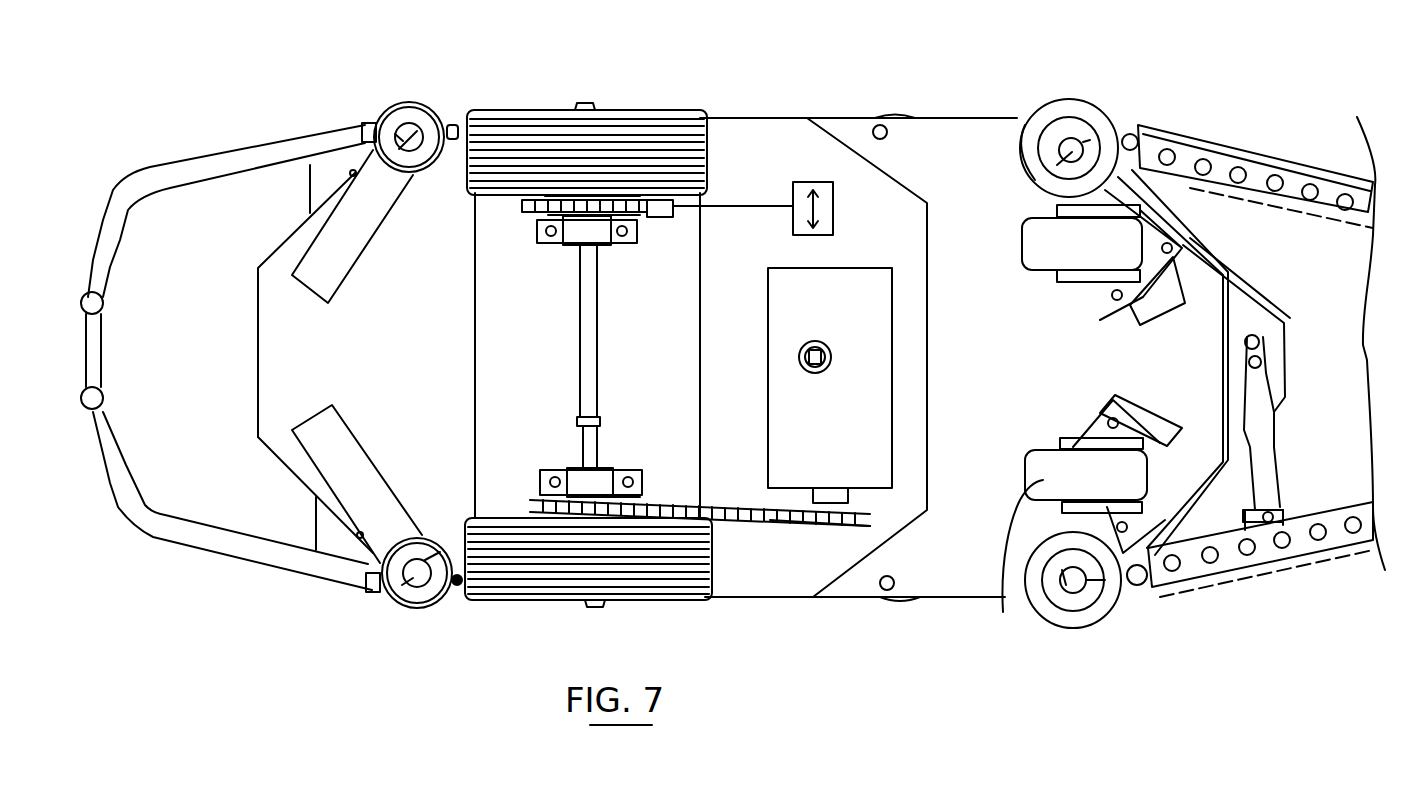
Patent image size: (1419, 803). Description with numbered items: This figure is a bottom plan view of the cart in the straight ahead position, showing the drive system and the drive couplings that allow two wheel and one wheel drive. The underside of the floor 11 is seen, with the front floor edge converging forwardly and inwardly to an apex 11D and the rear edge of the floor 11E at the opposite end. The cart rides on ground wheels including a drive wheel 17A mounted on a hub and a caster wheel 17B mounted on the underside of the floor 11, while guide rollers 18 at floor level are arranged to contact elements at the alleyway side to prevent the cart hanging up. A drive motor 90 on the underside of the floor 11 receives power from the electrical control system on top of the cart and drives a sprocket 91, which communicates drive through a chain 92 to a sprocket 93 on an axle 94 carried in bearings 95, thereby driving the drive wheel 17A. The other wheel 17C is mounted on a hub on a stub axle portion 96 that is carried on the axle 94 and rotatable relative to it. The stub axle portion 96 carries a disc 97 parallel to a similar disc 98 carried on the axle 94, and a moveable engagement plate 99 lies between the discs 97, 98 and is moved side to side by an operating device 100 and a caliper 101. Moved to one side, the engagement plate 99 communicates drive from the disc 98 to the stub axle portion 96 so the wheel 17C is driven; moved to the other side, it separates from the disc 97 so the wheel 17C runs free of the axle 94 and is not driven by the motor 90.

The floor 11 is at (963, 150).
The apex 11D is at (1287, 347).
The rear edge of the floor 11E is at (250, 348).
The drive wheel 17A is at (670, 595).
The caster wheel 17B is at (1015, 520).
The wheel 17C is at (657, 117).
The guide roller 18 is at (421, 608).
The drive motor 90 is at (775, 358).
The sprocket 91 is at (802, 520).
The chain 92 is at (718, 500).
The sprocket 93 is at (623, 498).
The axle 94 is at (582, 380).
The bearings 95 is at (550, 240).
The stub axle portion 96 is at (577, 205).
The disc 97 is at (603, 210).
The disc 98 is at (547, 222).
The moveable engagement plate 99 is at (660, 205).
The operating device 100 is at (797, 162).
The caliper 101 is at (662, 210).